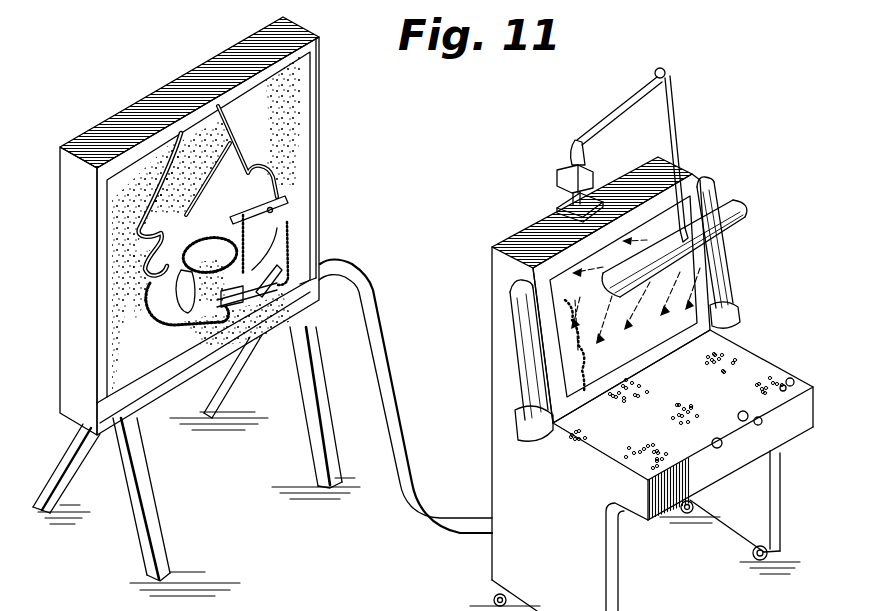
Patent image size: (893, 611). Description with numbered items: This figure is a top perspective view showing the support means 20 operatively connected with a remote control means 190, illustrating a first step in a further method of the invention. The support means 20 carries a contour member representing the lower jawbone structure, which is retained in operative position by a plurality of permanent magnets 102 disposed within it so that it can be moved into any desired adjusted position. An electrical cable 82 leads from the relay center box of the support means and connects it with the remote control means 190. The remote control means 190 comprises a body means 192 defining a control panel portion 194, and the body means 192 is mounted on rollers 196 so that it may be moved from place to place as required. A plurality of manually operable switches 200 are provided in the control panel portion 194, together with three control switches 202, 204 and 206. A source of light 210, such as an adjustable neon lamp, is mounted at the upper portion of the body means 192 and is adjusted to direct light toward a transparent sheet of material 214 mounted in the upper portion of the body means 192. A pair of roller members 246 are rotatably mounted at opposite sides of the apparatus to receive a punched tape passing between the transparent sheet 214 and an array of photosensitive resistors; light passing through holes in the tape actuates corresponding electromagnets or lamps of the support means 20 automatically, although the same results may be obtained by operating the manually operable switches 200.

The display board 20 is at (340, 133).
The permanent magnets 102 is at (276, 212).
The electrical cable 82 is at (360, 265).
The remote control means 190 is at (728, 146).
The body means 192 is at (492, 333).
The source of light 210 is at (590, 118).
The roller members 246 is at (512, 357).
The transparent sheet of material 214 is at (655, 340).
The control panel portion 194 is at (762, 358).
The manually operable switches 200 is at (794, 382).
The control switch 204 is at (738, 416).
The control switch 206 is at (758, 425).
The control switch 202 is at (715, 448).
The rollers 196 is at (752, 552).